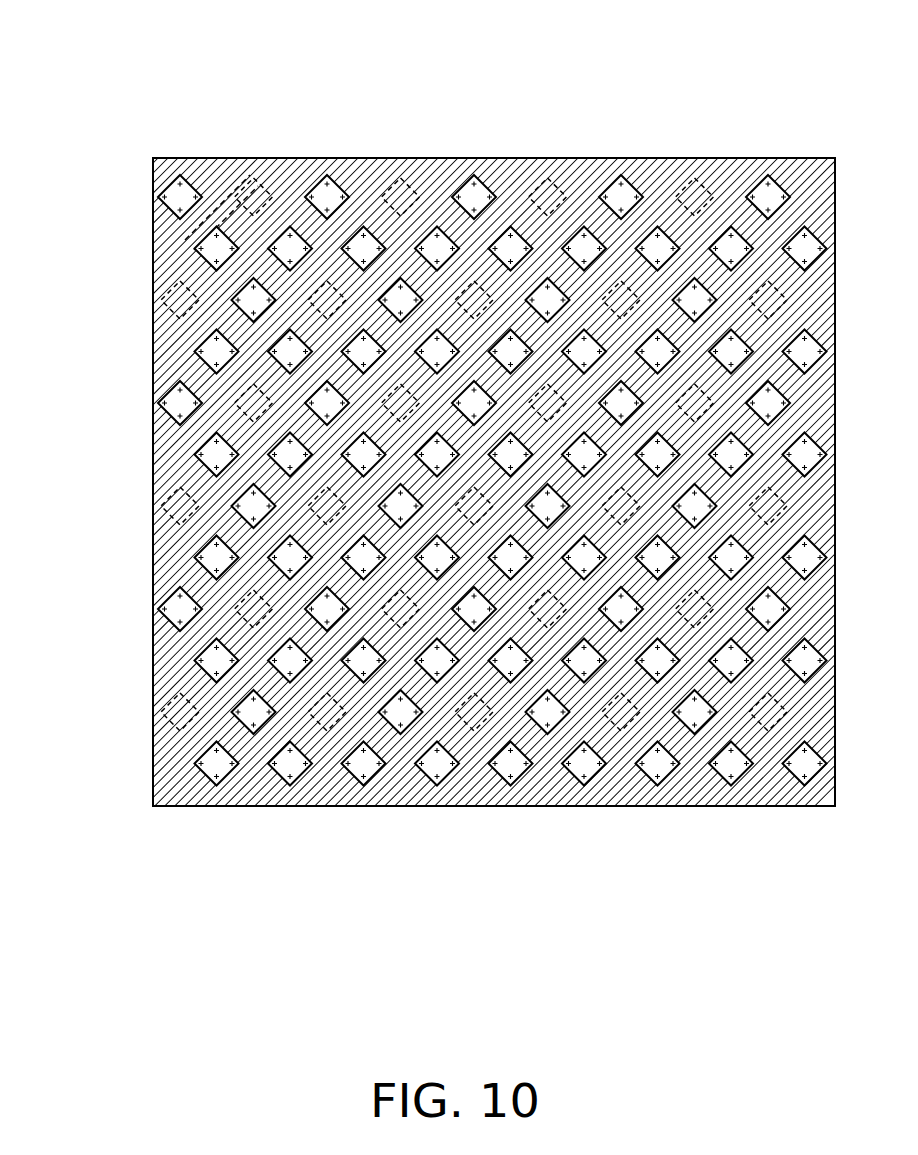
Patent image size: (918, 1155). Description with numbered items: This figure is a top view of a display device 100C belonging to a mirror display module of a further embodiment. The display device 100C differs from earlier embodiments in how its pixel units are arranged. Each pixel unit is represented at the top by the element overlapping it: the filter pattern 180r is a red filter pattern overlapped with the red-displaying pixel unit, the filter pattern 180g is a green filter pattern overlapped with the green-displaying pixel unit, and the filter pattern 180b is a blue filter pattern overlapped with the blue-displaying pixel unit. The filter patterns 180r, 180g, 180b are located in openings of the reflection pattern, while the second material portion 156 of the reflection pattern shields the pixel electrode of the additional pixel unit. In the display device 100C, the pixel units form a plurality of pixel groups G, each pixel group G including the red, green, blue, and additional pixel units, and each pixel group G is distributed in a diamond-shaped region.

The display device 100C is at (860, 959).
The second material portion 156 is at (273, 168).
The filter pattern 180b is at (295, 247).
The filter pattern 180r is at (202, 248).
The filter pattern 180g is at (237, 309).
The pixel group G is at (240, 188).